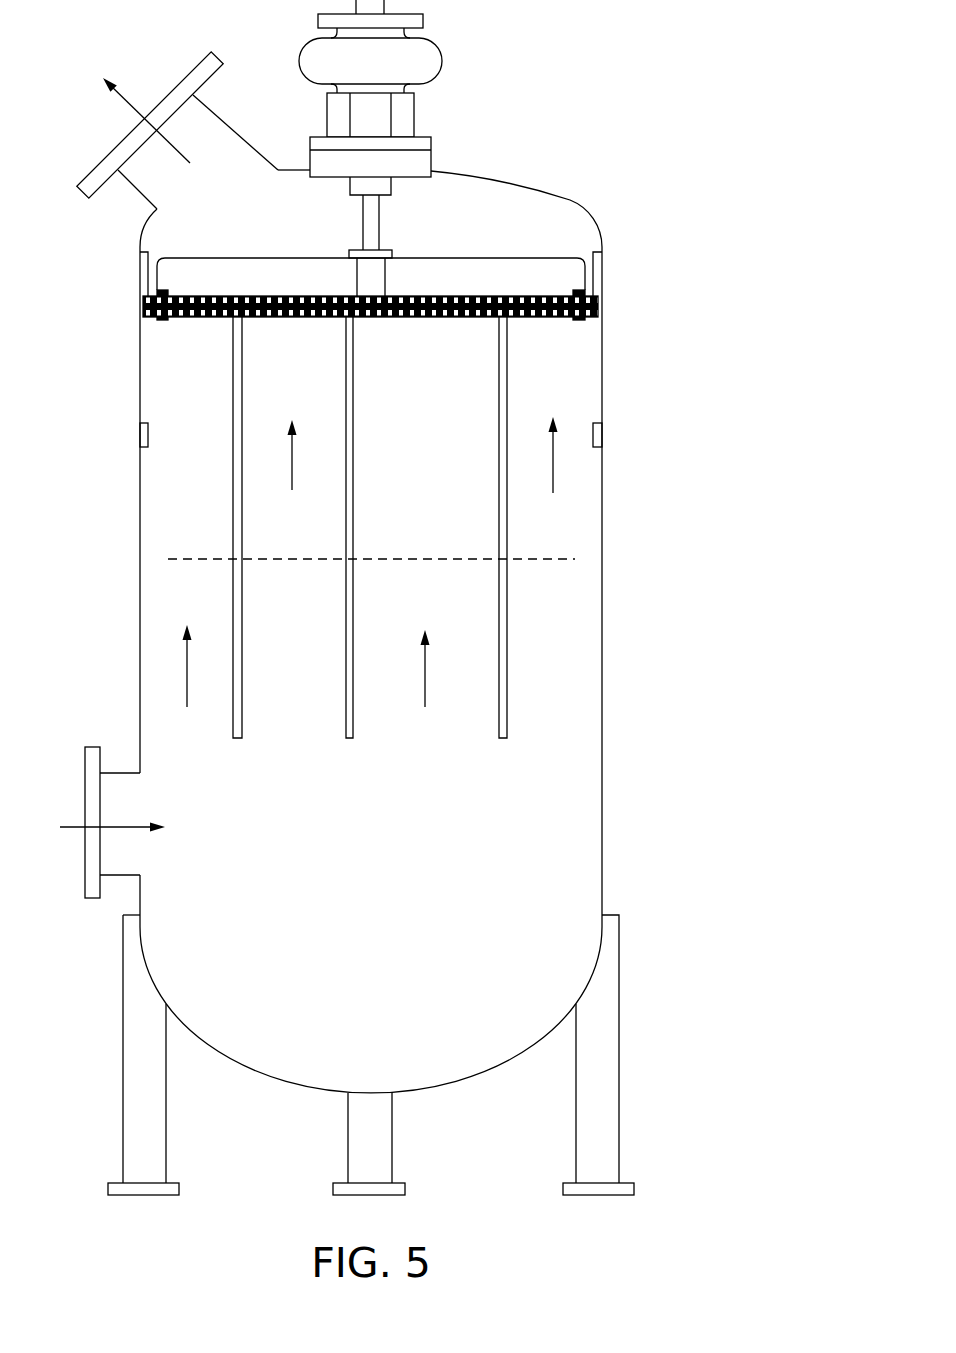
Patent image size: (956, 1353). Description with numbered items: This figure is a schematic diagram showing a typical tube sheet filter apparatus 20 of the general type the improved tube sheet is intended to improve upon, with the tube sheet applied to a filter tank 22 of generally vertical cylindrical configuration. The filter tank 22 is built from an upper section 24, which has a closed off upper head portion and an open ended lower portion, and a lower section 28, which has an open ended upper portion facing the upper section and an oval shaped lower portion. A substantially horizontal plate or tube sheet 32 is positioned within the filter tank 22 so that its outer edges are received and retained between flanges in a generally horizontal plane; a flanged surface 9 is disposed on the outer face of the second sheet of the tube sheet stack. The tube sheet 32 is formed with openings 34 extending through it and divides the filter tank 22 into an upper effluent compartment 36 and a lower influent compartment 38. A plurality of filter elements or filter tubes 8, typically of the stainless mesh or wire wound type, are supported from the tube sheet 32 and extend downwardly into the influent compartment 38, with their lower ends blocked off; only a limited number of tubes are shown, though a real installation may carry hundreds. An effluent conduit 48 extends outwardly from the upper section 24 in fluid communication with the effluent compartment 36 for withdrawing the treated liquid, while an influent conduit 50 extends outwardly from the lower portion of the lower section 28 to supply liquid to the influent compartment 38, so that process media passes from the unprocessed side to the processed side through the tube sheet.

The filter tubes 8 is at (346, 567).
The flanged surface 9 is at (240, 296).
The filter apparatus 20 is at (614, 671).
The filter tank 22 is at (473, 893).
The upper section 24 is at (558, 207).
The lower section 28 is at (574, 526).
The tube sheet 32 is at (433, 367).
The openings 34 is at (230, 320).
The upper effluent compartment 36 is at (463, 225).
The lower influent compartment 38 is at (445, 575).
The effluent conduit 48 is at (150, 170).
The influent conduit 50 is at (113, 793).